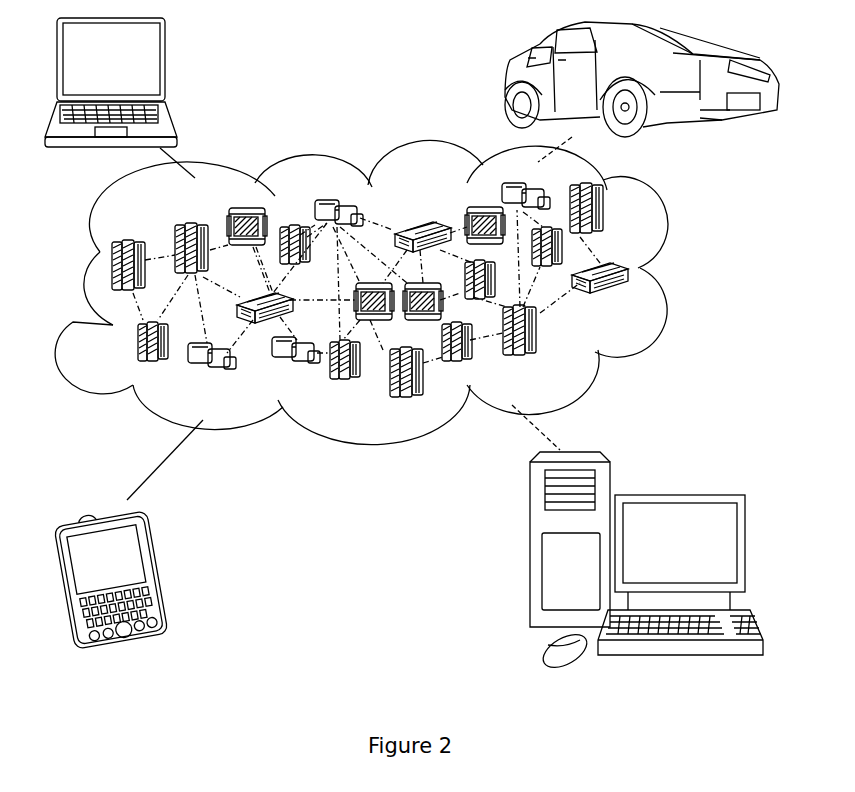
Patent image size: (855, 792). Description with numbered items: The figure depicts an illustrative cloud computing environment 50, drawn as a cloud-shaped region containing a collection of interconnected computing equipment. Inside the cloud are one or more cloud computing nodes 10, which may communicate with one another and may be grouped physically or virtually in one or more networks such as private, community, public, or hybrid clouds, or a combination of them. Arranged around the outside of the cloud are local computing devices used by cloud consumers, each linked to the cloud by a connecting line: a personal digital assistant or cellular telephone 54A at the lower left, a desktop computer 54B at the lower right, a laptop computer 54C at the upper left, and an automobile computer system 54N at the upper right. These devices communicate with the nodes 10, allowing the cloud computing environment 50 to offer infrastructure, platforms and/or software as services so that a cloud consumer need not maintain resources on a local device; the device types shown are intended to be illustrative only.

The cloud computing node 10 is at (640, 298).
The cloud computing environment 50 is at (678, 277).
The personal digital assistant or cellular telephone 54A is at (155, 563).
The desktop computer 54B is at (677, 495).
The laptop computer 54C is at (165, 65).
The automobile computer system 54N is at (508, 84).